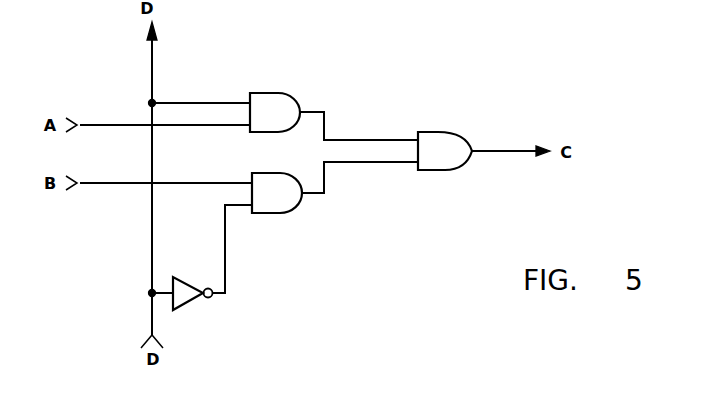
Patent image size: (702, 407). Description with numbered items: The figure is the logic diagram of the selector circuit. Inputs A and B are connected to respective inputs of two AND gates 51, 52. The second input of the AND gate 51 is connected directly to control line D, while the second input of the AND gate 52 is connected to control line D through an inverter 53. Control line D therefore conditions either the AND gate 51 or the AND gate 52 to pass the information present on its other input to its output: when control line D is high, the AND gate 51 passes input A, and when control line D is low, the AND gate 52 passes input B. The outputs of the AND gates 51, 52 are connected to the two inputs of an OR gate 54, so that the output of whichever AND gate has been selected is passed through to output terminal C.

The AND gate 51 is at (274, 102).
The AND gate 52 is at (280, 203).
The inverter 53 is at (188, 297).
The OR gate 54 is at (445, 138).